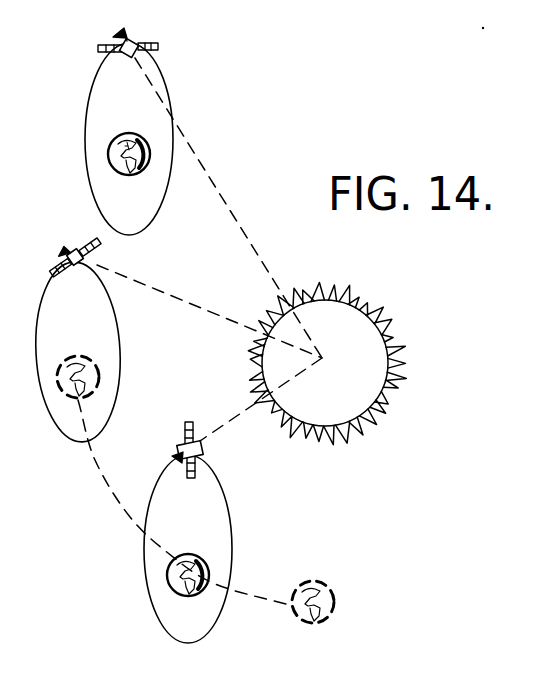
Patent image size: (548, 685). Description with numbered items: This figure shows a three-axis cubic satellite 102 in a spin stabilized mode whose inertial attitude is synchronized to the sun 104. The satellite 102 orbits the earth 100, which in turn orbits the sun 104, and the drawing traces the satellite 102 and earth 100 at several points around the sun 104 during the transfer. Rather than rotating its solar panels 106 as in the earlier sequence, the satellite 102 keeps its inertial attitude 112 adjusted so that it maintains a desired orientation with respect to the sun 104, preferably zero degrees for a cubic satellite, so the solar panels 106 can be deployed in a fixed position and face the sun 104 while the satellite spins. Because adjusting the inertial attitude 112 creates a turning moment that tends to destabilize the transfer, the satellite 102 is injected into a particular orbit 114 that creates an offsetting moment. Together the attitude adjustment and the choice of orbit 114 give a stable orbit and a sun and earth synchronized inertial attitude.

The earth 100 is at (149, 162).
The 3-axis cubic satellite 102 is at (122, 44).
The sun 104 is at (368, 300).
The solar panels 106 is at (134, 44).
The inertial attitude 112 is at (155, 81).
The orbit 114 is at (90, 185).